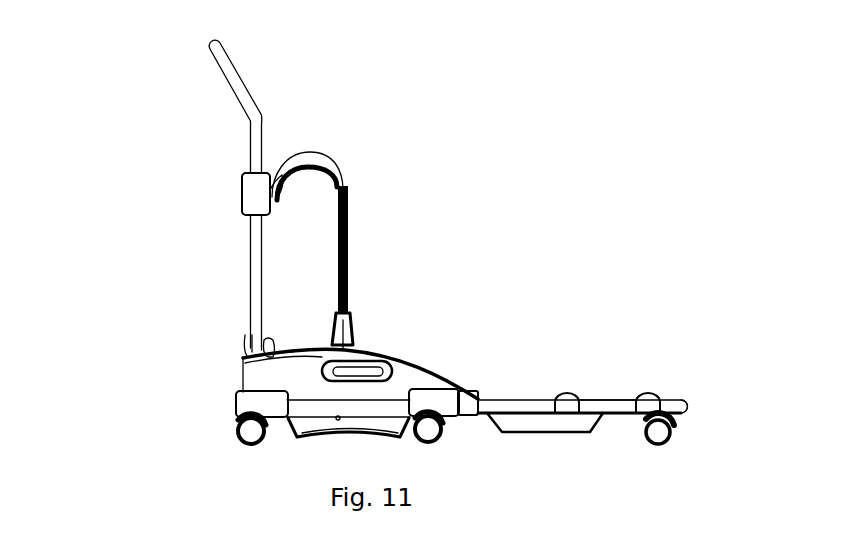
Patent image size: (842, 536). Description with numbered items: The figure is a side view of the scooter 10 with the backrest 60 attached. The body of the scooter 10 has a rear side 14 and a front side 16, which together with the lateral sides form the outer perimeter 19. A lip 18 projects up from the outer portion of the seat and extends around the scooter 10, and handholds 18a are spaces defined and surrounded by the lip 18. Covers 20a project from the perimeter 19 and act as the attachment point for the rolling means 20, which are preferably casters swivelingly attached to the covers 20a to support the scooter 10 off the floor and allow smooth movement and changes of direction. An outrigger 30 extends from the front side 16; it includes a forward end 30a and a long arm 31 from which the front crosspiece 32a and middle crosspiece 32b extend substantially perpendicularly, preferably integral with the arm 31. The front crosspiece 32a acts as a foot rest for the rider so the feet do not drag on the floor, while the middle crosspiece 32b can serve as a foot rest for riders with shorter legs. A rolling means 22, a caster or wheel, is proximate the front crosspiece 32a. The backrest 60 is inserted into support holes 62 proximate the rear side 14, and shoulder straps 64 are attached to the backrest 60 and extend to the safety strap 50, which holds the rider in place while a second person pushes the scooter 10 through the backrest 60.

The scooter 10 is at (132, 243).
The rear side 14 is at (117, 315).
The front side 16 is at (517, 323).
The lip 18 is at (418, 373).
The handhold 18a is at (393, 362).
The outer perimeter 19 is at (380, 409).
The rolling means 20 is at (248, 433).
The cover 20a is at (250, 408).
The rolling means 22 is at (658, 436).
The outrigger 30 is at (541, 390).
The forward end 30a is at (688, 403).
The long arm 31 is at (604, 397).
The front crosspiece 32a is at (653, 393).
The middle crosspiece 32b is at (567, 410).
The safety strap 50 is at (352, 333).
The backrest 60 is at (173, 114).
The support hole 62 is at (248, 347).
The shoulder strap 64 is at (311, 152).